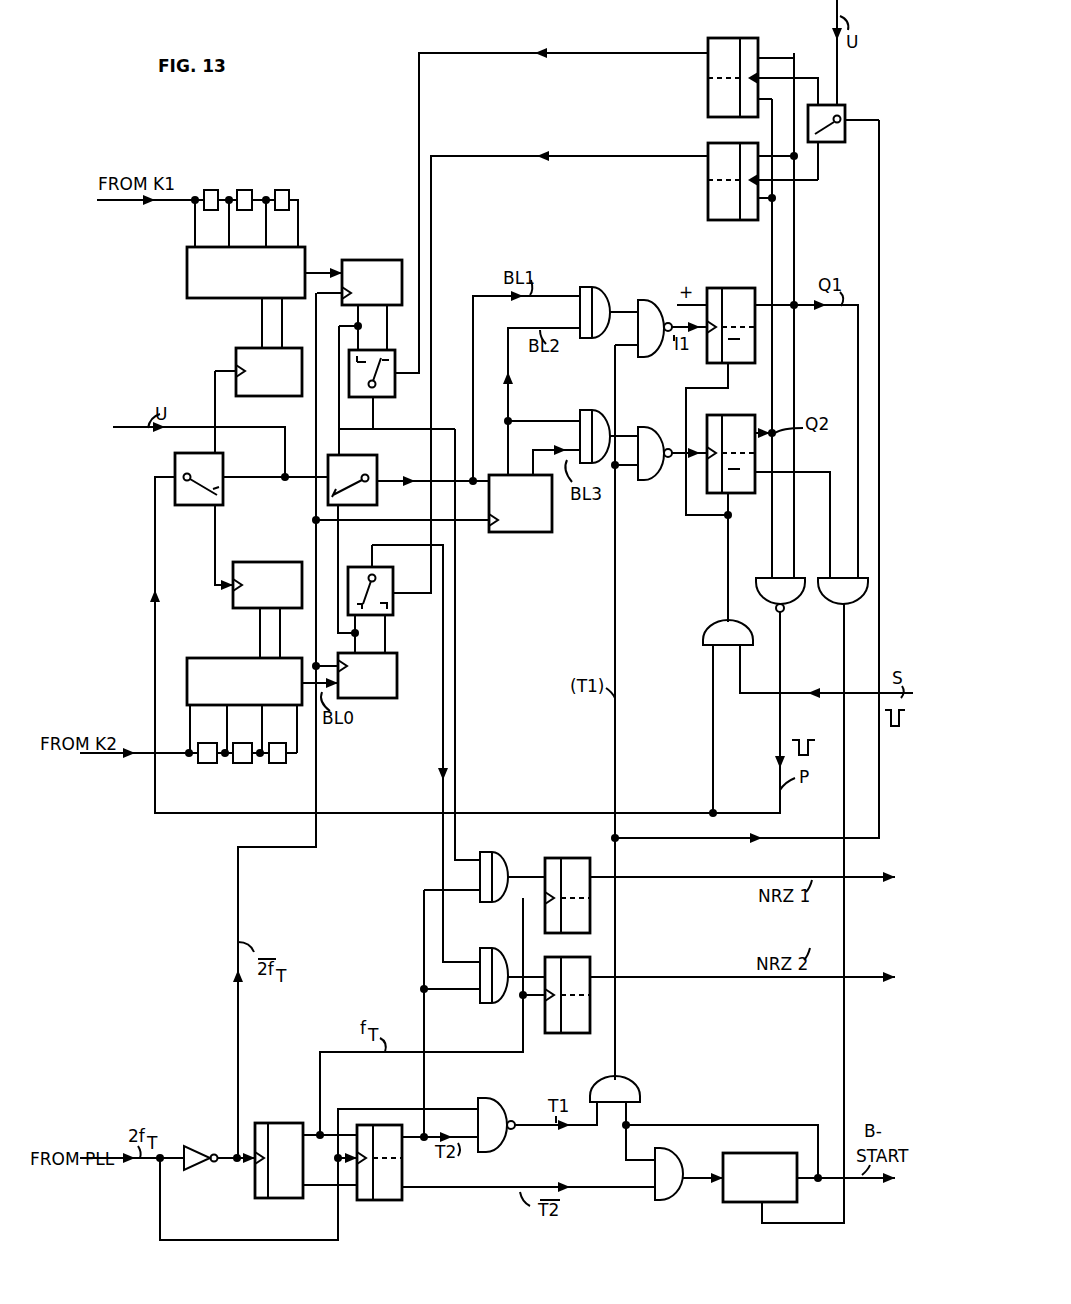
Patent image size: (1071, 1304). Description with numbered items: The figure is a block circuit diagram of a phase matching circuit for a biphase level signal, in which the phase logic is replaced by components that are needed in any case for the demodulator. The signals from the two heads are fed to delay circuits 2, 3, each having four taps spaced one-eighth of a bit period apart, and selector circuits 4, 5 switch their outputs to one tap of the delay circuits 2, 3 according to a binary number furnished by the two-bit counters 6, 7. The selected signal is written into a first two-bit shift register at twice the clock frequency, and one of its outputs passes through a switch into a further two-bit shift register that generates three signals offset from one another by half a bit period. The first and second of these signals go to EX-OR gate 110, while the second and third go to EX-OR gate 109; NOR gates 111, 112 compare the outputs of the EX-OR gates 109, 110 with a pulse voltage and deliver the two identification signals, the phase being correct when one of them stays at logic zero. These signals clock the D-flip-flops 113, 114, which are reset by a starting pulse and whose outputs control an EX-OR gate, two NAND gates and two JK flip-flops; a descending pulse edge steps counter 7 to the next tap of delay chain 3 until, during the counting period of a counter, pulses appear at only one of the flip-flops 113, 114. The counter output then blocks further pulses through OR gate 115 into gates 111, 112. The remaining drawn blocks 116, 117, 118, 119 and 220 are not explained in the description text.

The delay circuit 2 is at (249, 187).
The delay circuit 3 is at (236, 776).
The selector circuit 4 is at (219, 291).
The selector circuit 5 is at (208, 667).
The 2-bit counter 6 is at (283, 383).
The 2-bit counter 7 is at (277, 569).
The EX-OR gate 109 is at (589, 406).
The EX-OR gate 110 is at (589, 283).
The NOR gate 111 is at (656, 300).
The NOR gate 112 is at (655, 427).
The D-flip-flop 113 is at (733, 284).
The D-flip-flop 114 is at (738, 418).
The OR gate 115 is at (642, 1096).
The OR gate 116 is at (672, 1168).
The NAND gate 117 is at (492, 1104).
The JK flip-flop 118 is at (394, 1200).
The frequency divider 119 is at (274, 1200).
The inverter 220 is at (200, 1178).